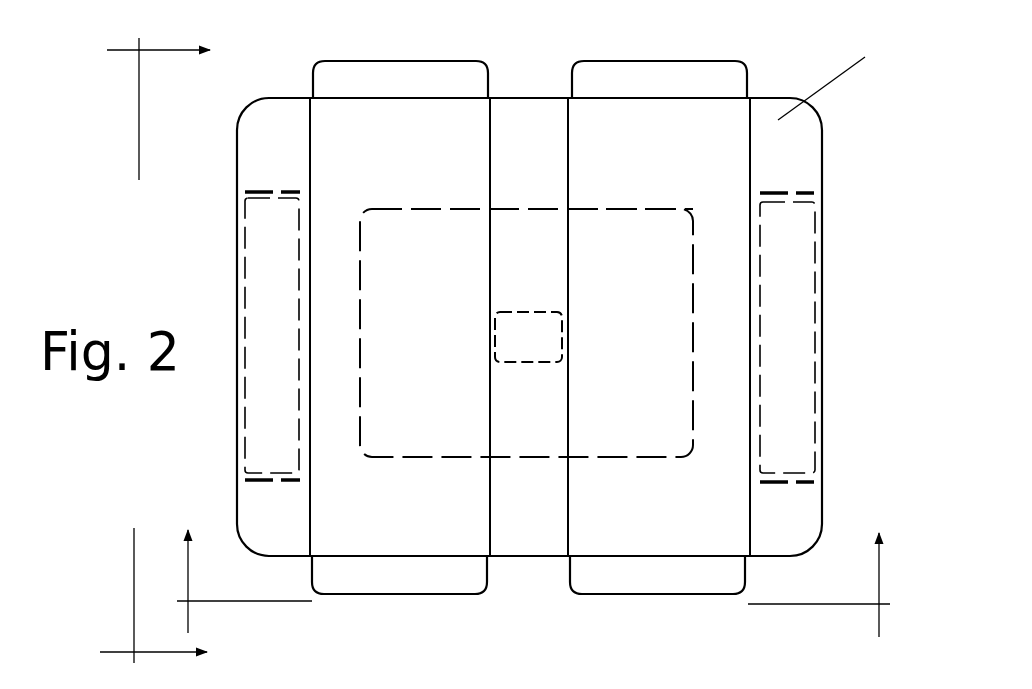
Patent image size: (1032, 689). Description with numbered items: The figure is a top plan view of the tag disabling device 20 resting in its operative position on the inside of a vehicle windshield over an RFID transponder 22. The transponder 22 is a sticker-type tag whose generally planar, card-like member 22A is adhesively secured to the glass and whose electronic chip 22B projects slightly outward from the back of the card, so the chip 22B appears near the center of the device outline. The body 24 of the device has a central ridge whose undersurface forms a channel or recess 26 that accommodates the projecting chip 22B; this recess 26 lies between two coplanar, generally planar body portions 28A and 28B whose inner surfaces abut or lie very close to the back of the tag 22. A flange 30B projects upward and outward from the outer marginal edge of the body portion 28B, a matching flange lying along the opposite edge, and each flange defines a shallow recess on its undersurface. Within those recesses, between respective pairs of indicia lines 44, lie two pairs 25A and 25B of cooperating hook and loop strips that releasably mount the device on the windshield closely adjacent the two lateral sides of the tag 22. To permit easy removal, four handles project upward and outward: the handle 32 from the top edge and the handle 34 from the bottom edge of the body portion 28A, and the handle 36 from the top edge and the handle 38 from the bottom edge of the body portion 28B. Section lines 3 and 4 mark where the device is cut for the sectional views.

The tag disabling device 20 is at (457, 327).
The RFID transponder 22 is at (650, 380).
The card-like member 22A is at (558, 210).
The electronic chip 22B is at (540, 335).
The body 24 is at (412, 518).
The pair of cooperating hook and loop strips 25A is at (788, 303).
The pair of cooperating hook and loop strips 25B is at (277, 300).
The channel or recess 26 is at (518, 523).
The planar body portion 28A is at (672, 167).
The planar body portion 28B is at (347, 178).
The flange 30B is at (278, 127).
The handle 32 is at (683, 78).
The handle 34 is at (658, 580).
The handle 36 is at (395, 73).
The handle 38 is at (430, 582).
The indicia lines 44 is at (264, 191).
The section line 3- 3 is at (529, 583).
The section line 4- 4 is at (155, 353).